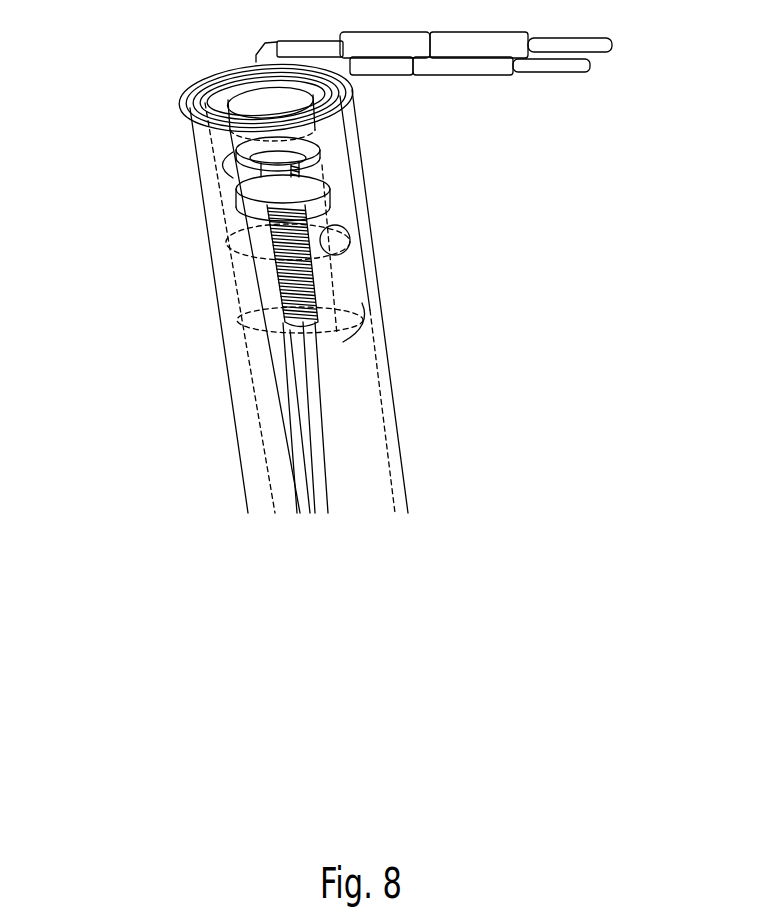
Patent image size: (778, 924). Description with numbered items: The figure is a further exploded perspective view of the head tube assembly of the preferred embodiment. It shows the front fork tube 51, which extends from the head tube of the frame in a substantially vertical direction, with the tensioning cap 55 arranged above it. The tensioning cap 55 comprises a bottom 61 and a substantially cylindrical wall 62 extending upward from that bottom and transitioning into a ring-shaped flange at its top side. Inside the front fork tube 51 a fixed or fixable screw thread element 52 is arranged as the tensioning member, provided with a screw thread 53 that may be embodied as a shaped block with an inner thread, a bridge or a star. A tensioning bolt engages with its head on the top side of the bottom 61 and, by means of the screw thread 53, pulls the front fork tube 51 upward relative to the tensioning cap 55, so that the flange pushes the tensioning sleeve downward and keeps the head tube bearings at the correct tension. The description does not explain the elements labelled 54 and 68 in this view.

The front fork tube 51 is at (363, 303).
The screw thread element 52 is at (327, 328).
The screw thread 53 is at (317, 343).
The threaded bolt 54 is at (307, 252).
The tensioning cap 55 is at (198, 149).
The bottom 61 is at (262, 177).
The cylindrical wall 62 is at (312, 142).
The opening 68 is at (378, 267).